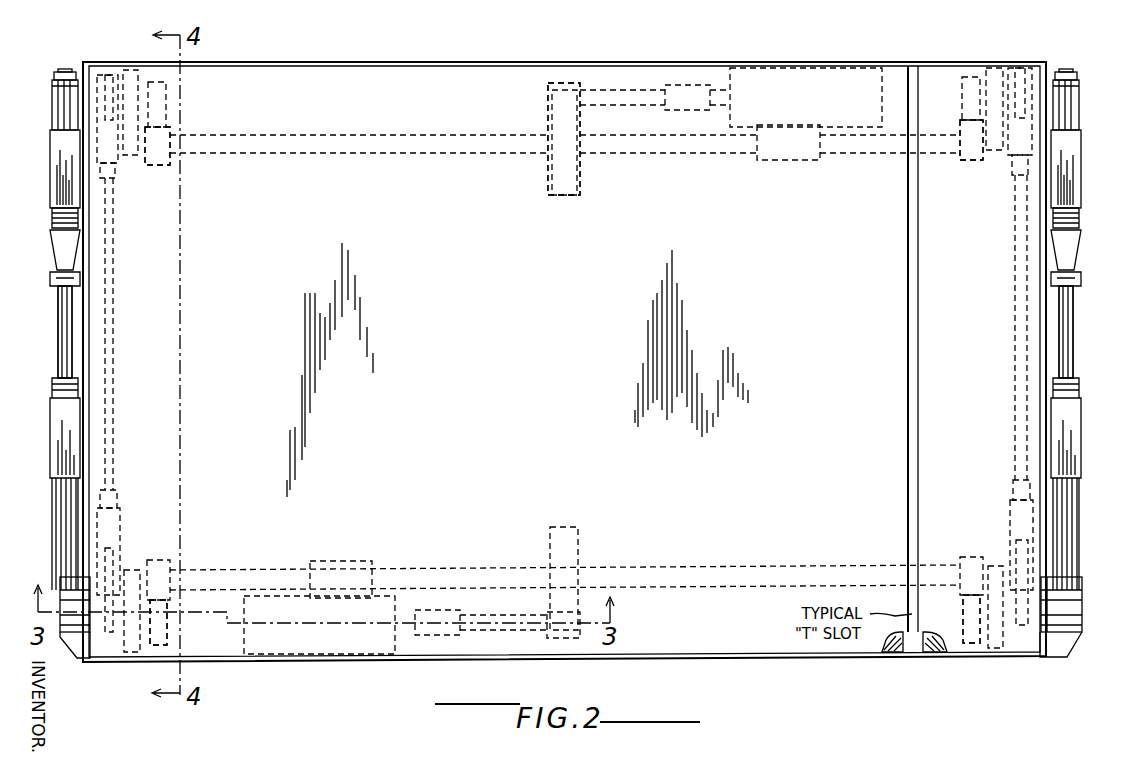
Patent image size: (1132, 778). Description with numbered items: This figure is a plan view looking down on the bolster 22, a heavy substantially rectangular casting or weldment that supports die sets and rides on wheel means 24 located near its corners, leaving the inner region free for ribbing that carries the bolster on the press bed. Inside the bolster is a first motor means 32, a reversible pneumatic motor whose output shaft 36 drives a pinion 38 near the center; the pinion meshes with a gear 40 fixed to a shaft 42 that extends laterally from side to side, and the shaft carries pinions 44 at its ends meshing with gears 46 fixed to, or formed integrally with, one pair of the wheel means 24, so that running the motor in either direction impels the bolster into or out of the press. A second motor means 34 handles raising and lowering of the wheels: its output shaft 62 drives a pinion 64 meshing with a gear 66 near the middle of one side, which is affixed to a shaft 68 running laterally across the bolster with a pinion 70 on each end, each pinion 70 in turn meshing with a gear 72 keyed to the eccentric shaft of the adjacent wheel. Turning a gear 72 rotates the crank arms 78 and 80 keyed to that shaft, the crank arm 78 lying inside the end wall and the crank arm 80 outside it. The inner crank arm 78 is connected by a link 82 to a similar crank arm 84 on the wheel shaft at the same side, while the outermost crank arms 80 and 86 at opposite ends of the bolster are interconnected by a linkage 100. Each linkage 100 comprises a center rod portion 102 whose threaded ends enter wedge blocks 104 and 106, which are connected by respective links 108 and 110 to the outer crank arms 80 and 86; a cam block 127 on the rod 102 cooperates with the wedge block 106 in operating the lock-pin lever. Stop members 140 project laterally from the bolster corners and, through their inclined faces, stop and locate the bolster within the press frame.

The bolster 22 is at (404, 70).
The wheel means 24 is at (130, 70).
The first motor means 32 is at (325, 654).
The second motor means 34 is at (782, 68).
The output shaft 36 is at (500, 635).
The pinion 38 is at (562, 640).
The gear 40 is at (578, 537).
The shaft 42 is at (470, 568).
The pinions 44 is at (160, 560).
The gears 46 is at (168, 637).
The output shaft 62 is at (620, 90).
The pinion 64 is at (563, 83).
The gear 66 is at (548, 183).
The shaft 68 is at (662, 153).
The pinion 70 is at (157, 166).
The gear 72 is at (170, 95).
The crank arm 78 is at (108, 75).
The crank arm 80 is at (65, 70).
The link 82 is at (114, 290).
The crank arm 84 is at (108, 660).
The crank arm 86 is at (62, 583).
The linkage 100 is at (47, 309).
The center rod portion 102 is at (58, 350).
The wedge block 104 is at (52, 440).
The wedge block 106 is at (52, 168).
The link 108 is at (68, 503).
The link 110 is at (64, 110).
The cam block 127 is at (54, 250).
The stop members 140 is at (76, 662).